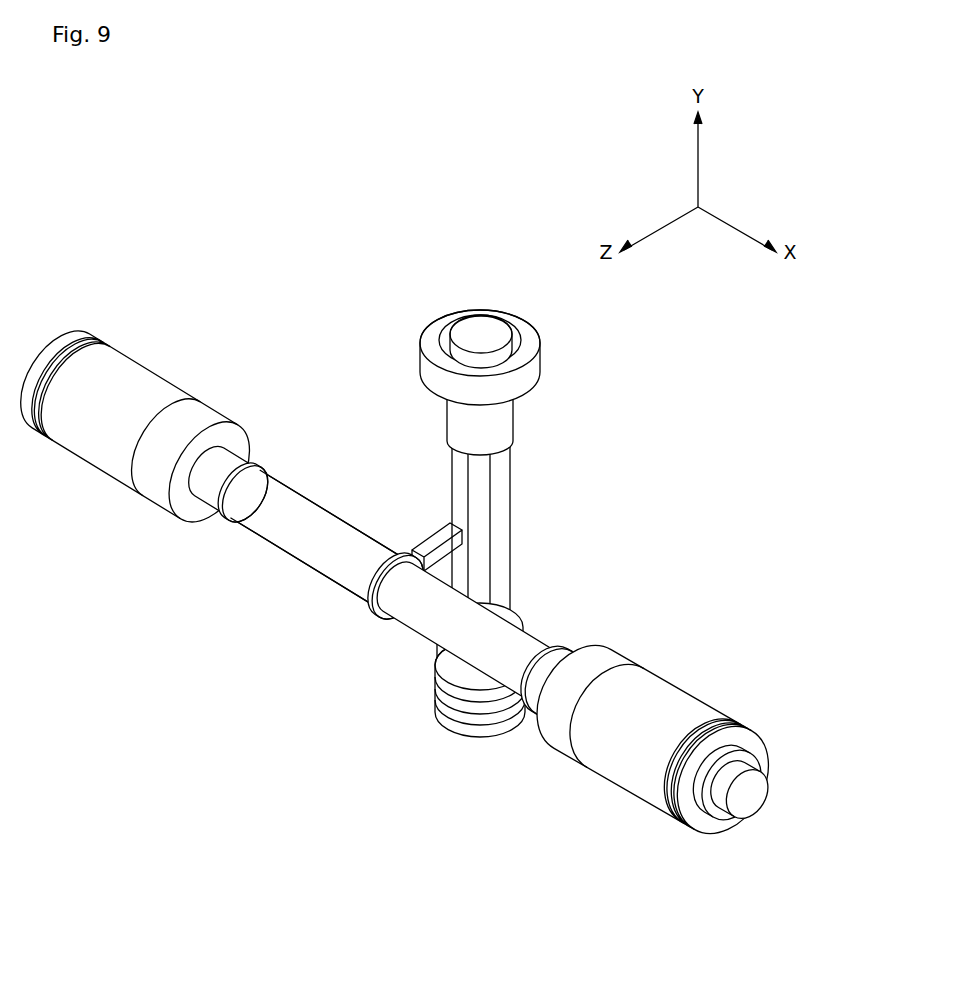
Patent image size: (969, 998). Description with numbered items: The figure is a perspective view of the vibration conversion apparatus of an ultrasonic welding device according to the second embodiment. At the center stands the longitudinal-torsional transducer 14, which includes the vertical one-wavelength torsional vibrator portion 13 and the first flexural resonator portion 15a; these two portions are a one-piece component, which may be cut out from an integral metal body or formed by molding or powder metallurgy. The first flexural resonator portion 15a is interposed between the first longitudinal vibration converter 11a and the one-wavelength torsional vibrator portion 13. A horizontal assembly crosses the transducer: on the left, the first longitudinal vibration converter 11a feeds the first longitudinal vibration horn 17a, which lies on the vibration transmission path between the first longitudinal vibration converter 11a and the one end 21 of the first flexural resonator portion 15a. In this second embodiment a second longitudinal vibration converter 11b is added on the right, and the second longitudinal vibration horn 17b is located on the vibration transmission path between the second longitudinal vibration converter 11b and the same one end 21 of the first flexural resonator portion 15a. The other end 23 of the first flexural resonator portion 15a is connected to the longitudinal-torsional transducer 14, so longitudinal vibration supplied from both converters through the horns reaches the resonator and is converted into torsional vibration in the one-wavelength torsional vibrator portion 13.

The first longitudinal vibration converter 11a is at (103, 443).
The second longitudinal vibration converter 11b is at (690, 693).
The first longitudinal vibration horn 17a is at (297, 537).
The second longitudinal vibration horn 17b is at (463, 640).
The one end of the first flexural resonator portion 21 is at (390, 613).
The one-wavelength torsional vibrator portion 13 is at (497, 506).
The longitudinal-torsional transducer 14 is at (514, 465).
The first flexural resonator portion 15a is at (432, 540).
The other end of the first flexural resonator portion 23 is at (507, 556).